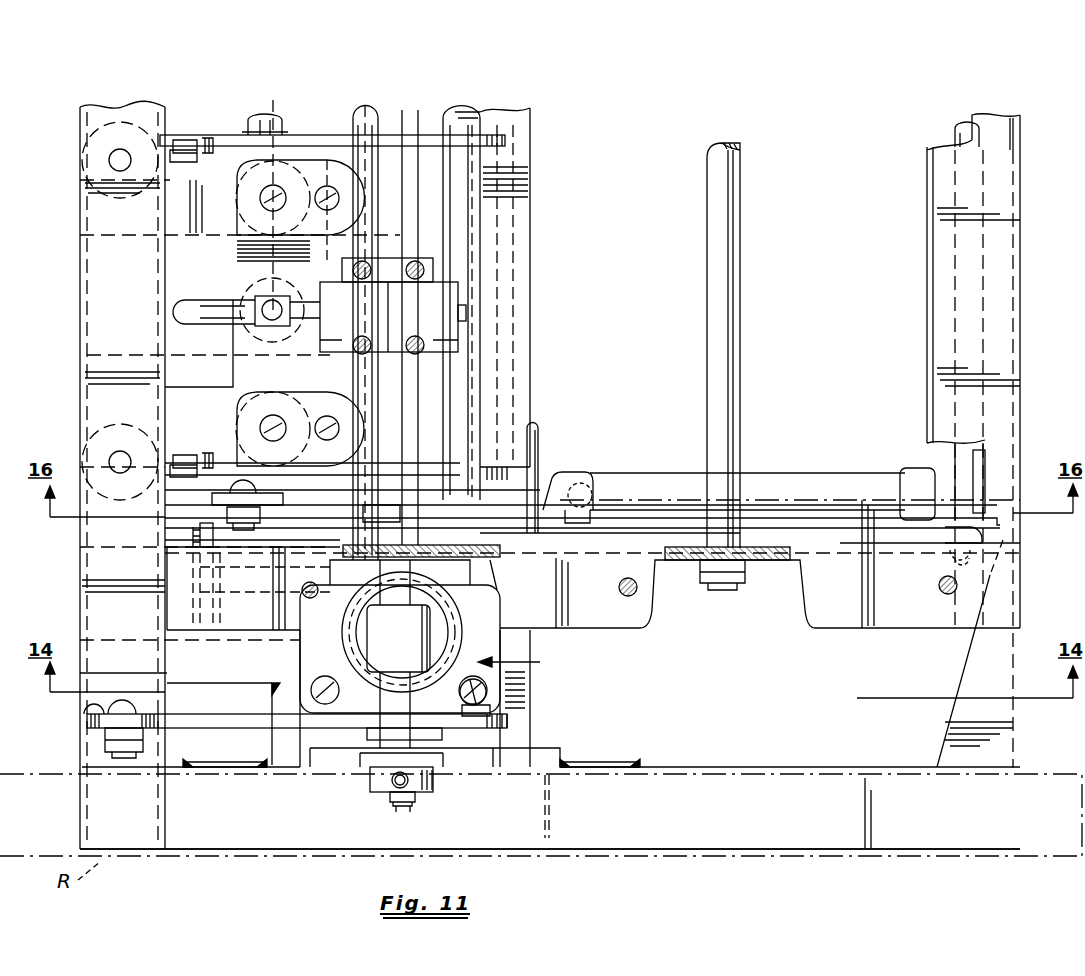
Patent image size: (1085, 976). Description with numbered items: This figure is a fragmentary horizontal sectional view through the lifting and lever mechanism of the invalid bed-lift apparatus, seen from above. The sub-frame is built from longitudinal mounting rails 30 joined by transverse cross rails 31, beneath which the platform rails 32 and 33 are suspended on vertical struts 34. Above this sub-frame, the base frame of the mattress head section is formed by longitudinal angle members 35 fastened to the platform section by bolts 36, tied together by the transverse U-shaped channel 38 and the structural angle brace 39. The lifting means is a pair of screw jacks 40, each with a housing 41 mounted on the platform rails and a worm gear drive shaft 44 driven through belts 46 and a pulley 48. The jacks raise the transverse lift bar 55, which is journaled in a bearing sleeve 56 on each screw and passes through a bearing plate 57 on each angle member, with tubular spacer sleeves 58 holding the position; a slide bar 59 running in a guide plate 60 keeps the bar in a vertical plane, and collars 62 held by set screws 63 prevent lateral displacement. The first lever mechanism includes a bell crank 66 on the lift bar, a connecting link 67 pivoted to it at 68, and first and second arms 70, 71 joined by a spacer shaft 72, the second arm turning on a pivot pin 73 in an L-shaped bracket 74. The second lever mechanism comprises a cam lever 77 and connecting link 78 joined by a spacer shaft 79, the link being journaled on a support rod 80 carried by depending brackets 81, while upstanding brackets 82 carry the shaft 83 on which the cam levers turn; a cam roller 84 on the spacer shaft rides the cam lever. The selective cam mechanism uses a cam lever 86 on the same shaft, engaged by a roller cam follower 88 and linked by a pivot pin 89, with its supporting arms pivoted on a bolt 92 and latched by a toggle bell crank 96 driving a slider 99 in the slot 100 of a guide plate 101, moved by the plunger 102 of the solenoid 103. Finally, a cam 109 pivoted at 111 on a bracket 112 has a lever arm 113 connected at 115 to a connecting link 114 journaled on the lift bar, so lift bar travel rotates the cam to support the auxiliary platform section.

The mounting rails 30 is at (618, 822).
The cross rails 31 is at (82, 750).
The platform rail 32 is at (517, 698).
The platform rail 33 is at (287, 692).
The struts 34 is at (193, 762).
The angle members 35 is at (880, 620).
The bolts 36 is at (628, 596).
The U-shaped channel 38 is at (150, 675).
The structural angle brace 39 is at (1003, 322).
The screw jacks 40 is at (521, 665).
The housing 41 is at (473, 640).
The worm gear drive shaft 44 is at (262, 600).
The belts 46 is at (200, 532).
The pulley 48 is at (222, 546).
The lift bar 55 is at (410, 800).
The bearing sleeve 56 is at (368, 642).
The bearing plate 57 is at (483, 590).
The tubular spacer sleeves 58 is at (370, 608).
The slide bar 59 is at (372, 773).
The guide plate 60 is at (480, 760).
The collars 62 is at (433, 778).
The set screw 63 is at (395, 800).
The bell crank 66 is at (306, 505).
The connecting link 67 is at (308, 497).
The pivot connection 68 is at (227, 517).
The first arm 70 is at (808, 480).
The second arm 71 is at (862, 498).
The spacer shaft 72 is at (932, 448).
The pivot pin 73 is at (593, 517).
The L-shaped bracket 74 is at (538, 462).
The cam lever 77 is at (662, 522).
The connecting link 78 is at (790, 563).
The spacer shaft 79 is at (985, 472).
The support rod 80 is at (740, 262).
The depending brackets 81 is at (690, 560).
The upstanding brackets 82 is at (493, 532).
The shaft 83 is at (353, 130).
The cam roller 84 is at (905, 543).
The cam lever 86 is at (235, 146).
The cam follower 88 is at (207, 133).
The pivot pin 89 is at (260, 120).
The bolt 92 is at (108, 162).
The bell crank 96 is at (240, 256).
The slider 99 is at (266, 306).
The slot 100 is at (215, 324).
The guide plate 101 is at (233, 355).
The plunger 102 is at (320, 290).
The solenoid 103 is at (425, 316).
The cam 109 is at (163, 722).
The pivot 111 is at (130, 755).
The bracket 112 is at (88, 705).
The lever arm 113 is at (360, 723).
The connecting link 114 is at (505, 722).
The pivot connection 115 is at (503, 733).